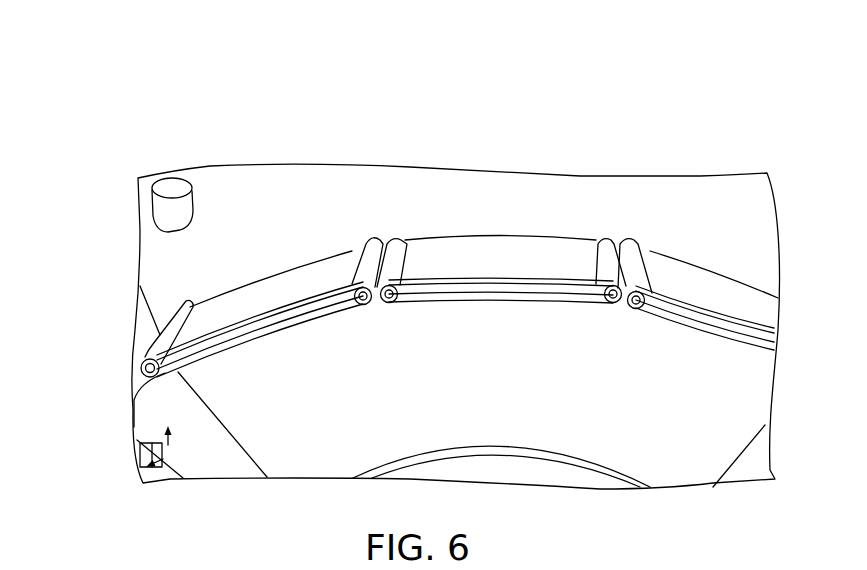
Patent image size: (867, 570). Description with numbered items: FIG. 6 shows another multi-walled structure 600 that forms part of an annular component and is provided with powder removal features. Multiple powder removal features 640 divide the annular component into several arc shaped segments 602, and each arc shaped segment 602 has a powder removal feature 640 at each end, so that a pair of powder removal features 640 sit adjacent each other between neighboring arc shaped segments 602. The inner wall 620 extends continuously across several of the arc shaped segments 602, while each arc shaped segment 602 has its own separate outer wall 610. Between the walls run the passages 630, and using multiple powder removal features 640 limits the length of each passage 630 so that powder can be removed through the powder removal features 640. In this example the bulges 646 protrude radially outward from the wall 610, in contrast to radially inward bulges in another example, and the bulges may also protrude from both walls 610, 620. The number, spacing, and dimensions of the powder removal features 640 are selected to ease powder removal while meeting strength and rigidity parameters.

The multi-walled structure 600 is at (95, 66).
The arc shaped segment 602 is at (279, 367).
The outer wall 610 is at (288, 273).
The inner wall 620 is at (547, 294).
The passage 630 is at (258, 325).
The powder removal feature 640 is at (372, 243).
The bulge 646 is at (153, 338).